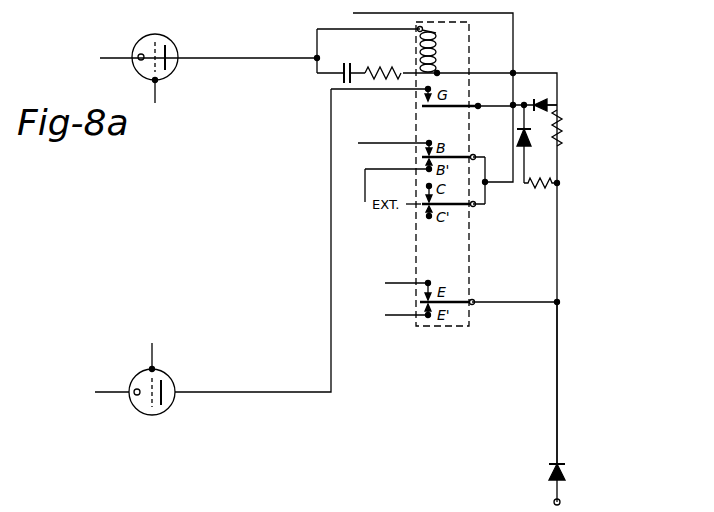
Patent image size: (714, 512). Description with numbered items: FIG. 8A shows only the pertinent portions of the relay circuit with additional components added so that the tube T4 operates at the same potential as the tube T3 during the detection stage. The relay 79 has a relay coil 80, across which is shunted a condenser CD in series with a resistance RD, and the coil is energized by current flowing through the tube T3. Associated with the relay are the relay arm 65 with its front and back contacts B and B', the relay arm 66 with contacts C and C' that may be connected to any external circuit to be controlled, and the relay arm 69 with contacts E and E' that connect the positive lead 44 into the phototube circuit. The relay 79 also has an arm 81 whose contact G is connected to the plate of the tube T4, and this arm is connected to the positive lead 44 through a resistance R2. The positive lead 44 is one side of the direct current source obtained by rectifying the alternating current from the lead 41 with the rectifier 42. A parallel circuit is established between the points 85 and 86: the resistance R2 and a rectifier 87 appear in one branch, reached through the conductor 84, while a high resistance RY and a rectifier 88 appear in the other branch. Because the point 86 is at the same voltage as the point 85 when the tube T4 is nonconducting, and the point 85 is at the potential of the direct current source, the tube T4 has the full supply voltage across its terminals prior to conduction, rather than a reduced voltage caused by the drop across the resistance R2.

The relay 79 is at (472, 23).
The relay coil 80 is at (438, 54).
The relay arm 81 is at (459, 104).
The conductor 84 is at (559, 106).
The point 85 is at (560, 183).
The point 86 is at (530, 98).
The rectifier 87 is at (547, 103).
The rectifier 88 is at (529, 139).
The relay arm 65 is at (459, 158).
The relay arm 66 is at (456, 207).
The relay arm 69 is at (456, 304).
The lead 44 is at (559, 372).
The rectifier 42 is at (566, 474).
The lead 41 is at (559, 495).
The tube T3 is at (168, 44).
The tube T4 is at (160, 412).
The condenser CD is at (342, 65).
The resistance RD is at (383, 64).
The resistance R2 is at (567, 135).
The resistance RY is at (540, 192).